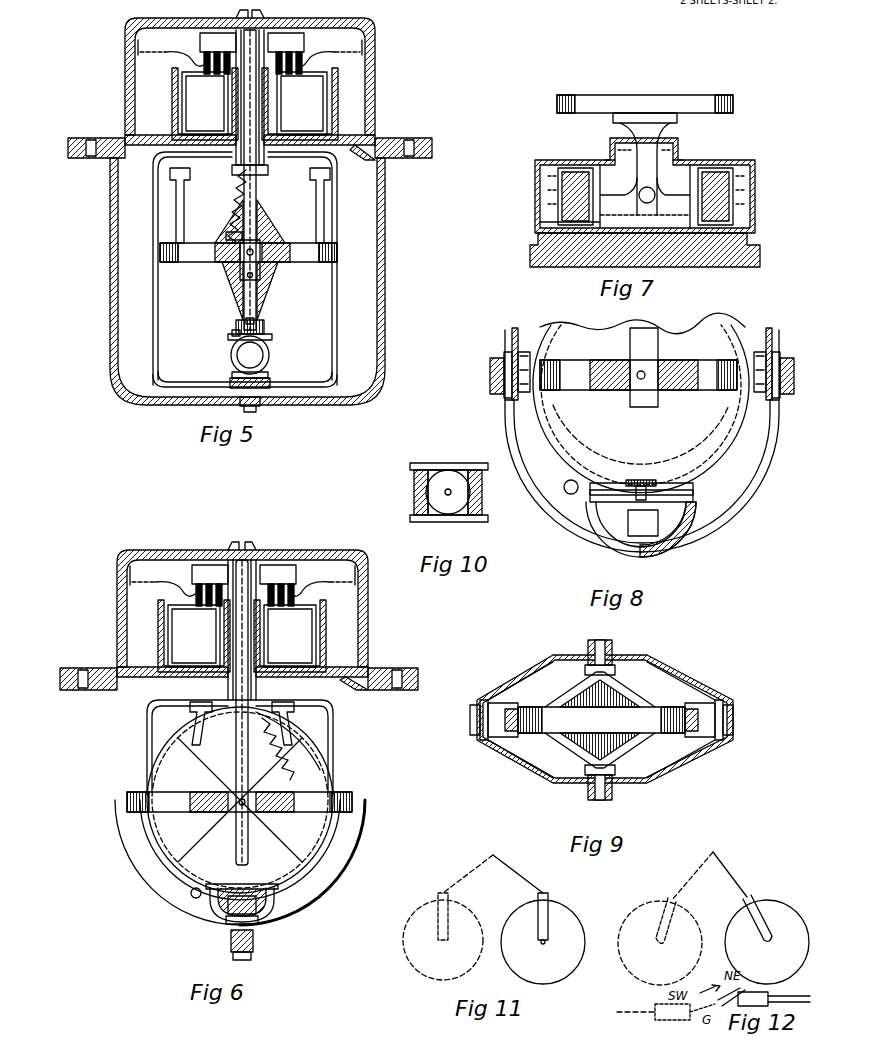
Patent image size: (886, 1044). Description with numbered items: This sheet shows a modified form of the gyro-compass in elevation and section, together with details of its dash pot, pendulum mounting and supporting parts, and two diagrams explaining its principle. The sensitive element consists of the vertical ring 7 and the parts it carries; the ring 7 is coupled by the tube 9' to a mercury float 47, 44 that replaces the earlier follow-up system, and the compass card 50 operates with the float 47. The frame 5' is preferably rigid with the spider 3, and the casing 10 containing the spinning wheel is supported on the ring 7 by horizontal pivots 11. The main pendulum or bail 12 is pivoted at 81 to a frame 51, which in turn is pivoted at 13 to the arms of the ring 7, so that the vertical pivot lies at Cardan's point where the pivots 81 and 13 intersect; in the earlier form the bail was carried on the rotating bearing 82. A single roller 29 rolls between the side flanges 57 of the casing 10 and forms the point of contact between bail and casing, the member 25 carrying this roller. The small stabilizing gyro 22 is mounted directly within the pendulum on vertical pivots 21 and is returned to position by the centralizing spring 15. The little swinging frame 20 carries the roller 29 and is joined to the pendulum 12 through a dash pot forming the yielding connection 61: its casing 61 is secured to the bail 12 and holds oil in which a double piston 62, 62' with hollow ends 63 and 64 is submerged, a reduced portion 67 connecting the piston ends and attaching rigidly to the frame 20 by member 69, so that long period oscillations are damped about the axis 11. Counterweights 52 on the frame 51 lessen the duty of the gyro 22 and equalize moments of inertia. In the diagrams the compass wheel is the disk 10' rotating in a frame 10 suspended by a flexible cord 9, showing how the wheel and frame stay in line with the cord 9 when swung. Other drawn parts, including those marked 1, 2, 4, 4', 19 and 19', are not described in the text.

In FIG. 5, the mounting flange 1 is at (80, 140).
In FIG. 6, the mounting flange 1 is at (74, 668).
In FIG. 5, the flange bolt 2 is at (92, 140).
In FIG. 6, the flange bolt 2 is at (86, 670).
In FIG. 5, the spider 3 is at (372, 140).
In FIG. 6, the spider 3 is at (366, 670).
In FIG. 5, the upper housing casing 4 is at (246, 76).
In FIG. 6, the upper housing casing 4 is at (242, 600).
In FIG. 5, the casing terminal 4' is at (246, 48).
In FIG. 6, the casing terminal 4' is at (245, 557).
In FIG. 5, the frame 5' is at (263, 285).
In FIG. 6, the frame 5' is at (306, 882).
In FIG. 5, the vertical ring 7 is at (170, 160).
In FIG. 6, the vertical ring 7 is at (320, 704).
In FIG. 8, the vertical ring 7 is at (514, 330).
In FIG. 9, the vertical ring 7 is at (612, 652).
In FIG. 11, the flexible cord 9 is at (471, 897).
In FIG. 12, the flexible cord 9 is at (714, 897).
In FIG. 5, the tube 9' is at (252, 102).
In FIG. 6, the tube 9' is at (235, 630).
In FIG. 5, the casing 10 is at (257, 260).
In FIG. 8, the casing 10 is at (641, 409).
In FIG. 9, the casing 10 is at (601, 720).
In FIG. 11, the casing 10 is at (555, 946).
In FIG. 11, the disk 10' is at (506, 939).
In FIG. 12, the disk 10' is at (722, 939).
In FIG. 8, the horizontal pivots 11 is at (748, 370).
In FIG. 9, the horizontal pivots 11 is at (510, 706).
In FIG. 5, the pendulum 12 is at (262, 294).
In FIG. 6, the pendulum 12 is at (140, 852).
In FIG. 7, the pendulum 12 is at (566, 262).
In FIG. 8, the pendulum 12 is at (508, 356).
In FIG. 9, the pendulum 12 is at (492, 742).
In FIG. 5, the pivot 13 is at (160, 250).
In FIG. 6, the pivot 13 is at (232, 806).
In FIG. 8, the pivot 13 is at (645, 372).
In FIG. 9, the pivot 13 is at (596, 640).
In FIG. 6, the centralizing spring 15 is at (270, 898).
In FIG. 8, the centralizing spring 15 is at (670, 508).
In FIG. 5, the coil spring 19 is at (214, 206).
In FIG. 6, the coil spring 19 is at (305, 746).
In FIG. 5, the brush contacts 19' is at (252, 62).
In FIG. 6, the brush contacts 19' is at (244, 585).
In FIG. 5, the frame 20 is at (235, 300).
In FIG. 6, the frame 20 is at (142, 830).
In FIG. 7, the frame 20 is at (668, 100).
In FIG. 8, the frame 20 is at (560, 444).
In FIG. 5, the vertical pivots 21 is at (262, 337).
In FIG. 6, the vertical pivots 21 is at (270, 912).
In FIG. 8, the vertical pivots 21 is at (636, 552).
In FIG. 5, the gyro 22 is at (268, 350).
In FIG. 6, the gyro 22 is at (216, 908).
In FIG. 8, the gyro 22 is at (660, 525).
In FIG. 5, the member 25 is at (258, 322).
In FIG. 8, the member 25 is at (644, 486).
In FIG. 10, the member 25 is at (414, 492).
In FIG. 5, the roller 29 is at (236, 324).
In FIG. 8, the roller 29 is at (632, 480).
In FIG. 10, the roller 29 is at (454, 476).
In FIG. 5, the mercury float 44 is at (175, 92).
In FIG. 6, the mercury float 44 is at (196, 672).
In FIG. 5, the float 47 is at (254, 103).
In FIG. 6, the float 47 is at (242, 636).
In FIG. 5, the compass card 50 is at (172, 52).
In FIG. 6, the compass card 50 is at (162, 582).
In FIG. 5, the frame 51 is at (192, 262).
In FIG. 6, the frame 51 is at (127, 800).
In FIG. 8, the frame 51 is at (498, 360).
In FIG. 9, the frame 51 is at (678, 670).
In FIG. 5, the counterweights 52 is at (170, 182).
In FIG. 6, the counterweights 52 is at (192, 712).
In FIG. 9, the counterweights 52 is at (616, 666).
In FIG. 5, the side flanges 57 is at (234, 332).
In FIG. 10, the side flanges 57 is at (450, 463).
In FIG. 6, the dash pot casing 61 is at (192, 894).
In FIG. 7, the dash pot casing 61 is at (540, 180).
In FIG. 8, the dash pot casing 61 is at (571, 494).
In FIG. 7, the double piston 62 is at (692, 196).
In FIG. 7, the piston 62' is at (617, 145).
In FIG. 7, the hollow end 63 is at (715, 196).
In FIG. 7, the hollow end 64 is at (575, 196).
In FIG. 7, the reduced portion 67 is at (572, 222).
In FIG. 7, the member 69 is at (672, 132).
In FIG. 5, the pivots 81 is at (226, 236).
In FIG. 8, the pivots 81 is at (504, 384).
In FIG. 9, the pivots 81 is at (482, 706).
In FIG. 8, the rotating bearing 82 is at (490, 376).
In FIG. 9, the rotating bearing 82 is at (470, 720).